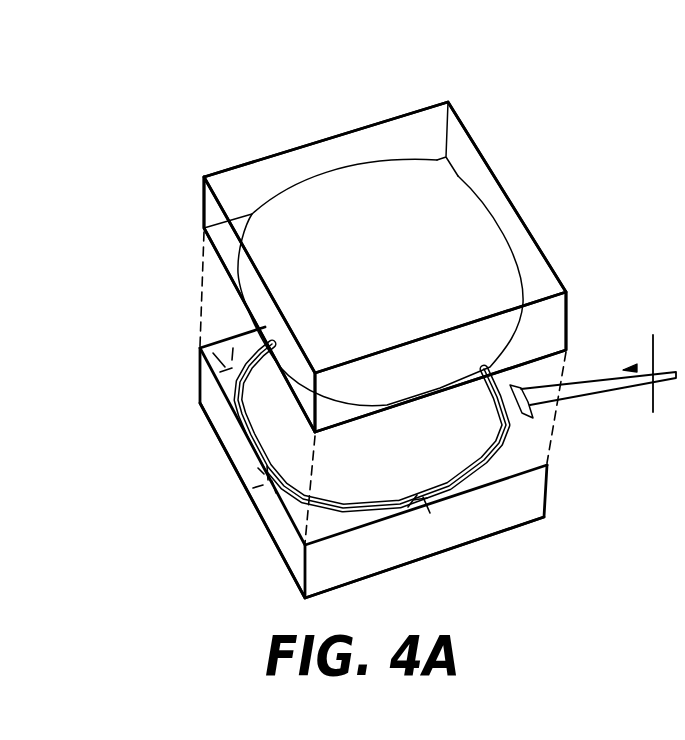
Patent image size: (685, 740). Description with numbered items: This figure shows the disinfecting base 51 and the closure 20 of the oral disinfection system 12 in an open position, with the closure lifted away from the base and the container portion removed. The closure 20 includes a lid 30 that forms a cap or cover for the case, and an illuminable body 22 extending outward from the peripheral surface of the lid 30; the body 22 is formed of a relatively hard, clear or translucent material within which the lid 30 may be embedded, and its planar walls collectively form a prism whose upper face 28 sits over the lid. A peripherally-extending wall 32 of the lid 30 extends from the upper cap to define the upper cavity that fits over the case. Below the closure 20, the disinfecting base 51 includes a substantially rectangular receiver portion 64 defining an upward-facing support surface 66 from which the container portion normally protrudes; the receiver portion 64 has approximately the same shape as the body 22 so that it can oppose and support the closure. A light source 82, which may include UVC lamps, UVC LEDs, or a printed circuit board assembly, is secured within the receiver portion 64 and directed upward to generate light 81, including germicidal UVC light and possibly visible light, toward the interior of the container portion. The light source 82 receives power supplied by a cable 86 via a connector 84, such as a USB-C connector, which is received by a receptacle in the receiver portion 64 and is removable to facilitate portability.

The oral disinfection system 12 is at (213, 110).
The closure 20 is at (120, 173).
The body 22 is at (212, 214).
The top surface of cover 28 is at (398, 113).
The lid 30 is at (490, 257).
The peripherally-extending wall 32 is at (267, 308).
The disinfecting base 51 is at (143, 425).
The receiver portion 64 is at (520, 513).
The support surface 66 is at (293, 512).
The light 81 is at (423, 508).
The light source 82 is at (287, 450).
The connector 84 is at (547, 387).
The cable 86 is at (602, 388).